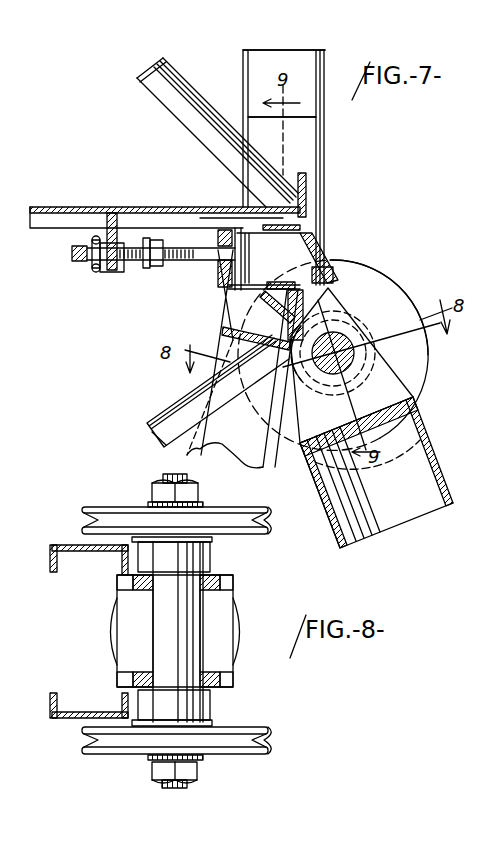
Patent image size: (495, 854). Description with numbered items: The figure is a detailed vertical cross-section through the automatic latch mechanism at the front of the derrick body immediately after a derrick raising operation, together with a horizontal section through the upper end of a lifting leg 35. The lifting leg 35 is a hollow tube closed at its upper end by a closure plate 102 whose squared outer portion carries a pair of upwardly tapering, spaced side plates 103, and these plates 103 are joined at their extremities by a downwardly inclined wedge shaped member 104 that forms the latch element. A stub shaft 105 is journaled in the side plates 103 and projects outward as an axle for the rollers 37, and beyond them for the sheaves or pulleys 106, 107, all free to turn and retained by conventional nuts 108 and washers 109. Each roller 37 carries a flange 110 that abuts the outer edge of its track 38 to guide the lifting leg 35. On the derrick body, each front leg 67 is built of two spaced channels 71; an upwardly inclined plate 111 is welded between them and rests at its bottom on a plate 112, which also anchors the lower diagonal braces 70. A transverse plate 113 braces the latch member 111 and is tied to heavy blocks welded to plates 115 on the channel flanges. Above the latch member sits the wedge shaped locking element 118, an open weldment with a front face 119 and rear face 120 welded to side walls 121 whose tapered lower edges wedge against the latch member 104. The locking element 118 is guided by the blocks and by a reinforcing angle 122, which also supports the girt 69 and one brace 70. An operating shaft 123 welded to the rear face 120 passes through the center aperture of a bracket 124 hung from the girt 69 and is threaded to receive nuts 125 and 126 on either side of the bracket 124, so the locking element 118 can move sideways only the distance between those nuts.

In FIG. 7, the lifting leg 35 is at (430, 486).
In FIG. 8, the lifting leg 35 is at (234, 628).
In FIG. 8, the roller 37 is at (211, 557).
In FIG. 7, the track 38 is at (326, 128).
In FIG. 7, the front leg 67 is at (277, 43).
In FIG. 7, the girt 69 is at (64, 207).
In FIG. 7, the diagonal brace 70 is at (167, 86).
In FIG. 8, the channel 71 is at (50, 547).
In FIG. 7, the closure plate 102 is at (283, 446).
In FIG. 8, the closure plate 102 is at (222, 655).
In FIG. 7, the side plate 103 is at (392, 382).
In FIG. 8, the side plate 103 is at (233, 576).
In FIG. 7, the wedge shaped member 104 is at (378, 268).
In FIG. 7, the stub shaft 105 is at (370, 328).
In FIG. 8, the stub shaft 105 is at (157, 607).
In FIG. 7, the sheave or pulley 106 is at (420, 352).
In FIG. 8, the sheave or pulley 106 is at (108, 508).
In FIG. 8, the sheave or pulley 107 is at (252, 752).
In FIG. 8, the nut 108 is at (164, 488).
In FIG. 8, the washer 109 is at (208, 505).
In FIG. 8, the flange 110 is at (122, 549).
In FIG. 7, the inclined plate (latch member) 111 is at (336, 332).
In FIG. 7, the plate 112 is at (270, 360).
In FIG. 7, the transverse plate 113 is at (268, 300).
In FIG. 7, the plate 115 is at (305, 153).
In FIG. 7, the wedge shaped locking element 118 is at (210, 275).
In FIG. 7, the front face 119 is at (300, 230).
In FIG. 7, the rear face 120 is at (215, 281).
In FIG. 7, the side wall 121 is at (322, 262).
In FIG. 7, the reinforcing angle 122 is at (306, 192).
In FIG. 7, the operating shaft 123 is at (72, 252).
In FIG. 7, the bracket 124 is at (137, 210).
In FIG. 7, the nut 125 is at (90, 271).
In FIG. 7, the nut 126 is at (143, 269).